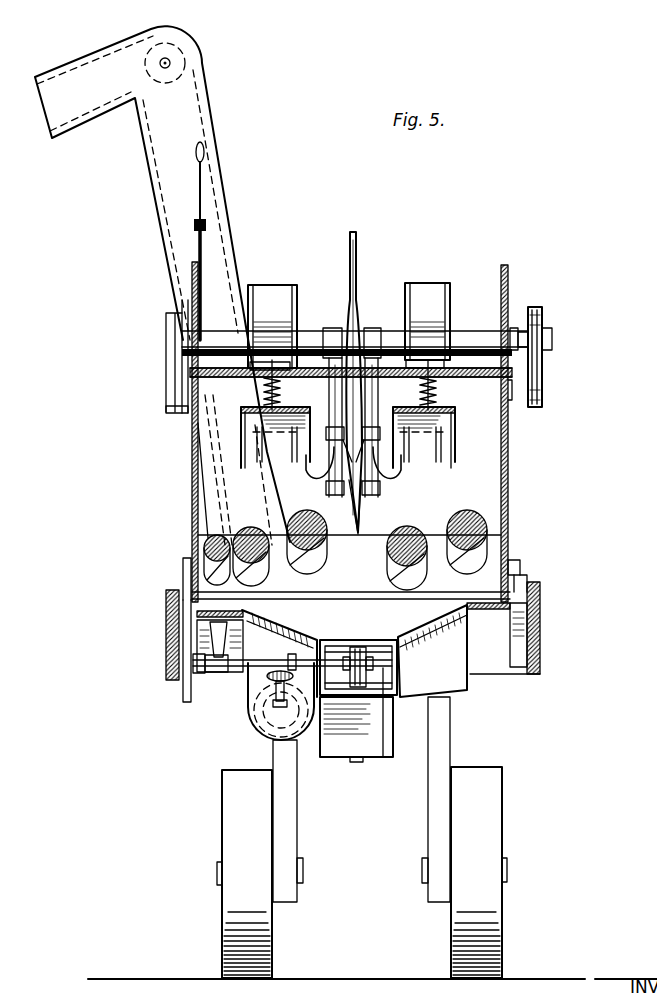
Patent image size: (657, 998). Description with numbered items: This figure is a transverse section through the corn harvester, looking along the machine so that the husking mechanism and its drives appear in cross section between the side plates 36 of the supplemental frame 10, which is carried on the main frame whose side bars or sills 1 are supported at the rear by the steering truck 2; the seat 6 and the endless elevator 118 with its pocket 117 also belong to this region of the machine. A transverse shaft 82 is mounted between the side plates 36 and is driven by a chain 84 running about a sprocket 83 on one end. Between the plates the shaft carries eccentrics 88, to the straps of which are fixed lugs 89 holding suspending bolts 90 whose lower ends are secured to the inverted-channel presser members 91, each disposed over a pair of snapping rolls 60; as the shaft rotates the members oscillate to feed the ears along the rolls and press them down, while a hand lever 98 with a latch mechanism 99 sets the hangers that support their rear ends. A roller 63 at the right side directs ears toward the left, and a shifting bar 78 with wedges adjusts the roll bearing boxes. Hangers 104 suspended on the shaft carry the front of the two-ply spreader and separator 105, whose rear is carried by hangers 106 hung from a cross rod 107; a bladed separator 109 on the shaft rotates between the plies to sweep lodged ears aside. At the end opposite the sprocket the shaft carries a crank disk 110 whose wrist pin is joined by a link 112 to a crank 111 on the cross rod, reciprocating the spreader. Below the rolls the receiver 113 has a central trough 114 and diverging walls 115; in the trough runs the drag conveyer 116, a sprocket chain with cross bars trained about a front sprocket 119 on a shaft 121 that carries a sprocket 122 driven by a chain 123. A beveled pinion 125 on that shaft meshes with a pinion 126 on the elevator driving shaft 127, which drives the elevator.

The side bars or sills 1 is at (166, 632).
The steering truck 2 is at (362, 837).
The seat 6 is at (380, 472).
The supplemental frame 10 is at (510, 633).
The side plates 36 is at (197, 508).
The snapping rolls 60 is at (262, 528).
The roller 63 is at (213, 538).
The shifting bar 78 is at (527, 558).
The transverse shaft 82 is at (470, 333).
The sprocket 83 is at (540, 308).
The chain 84 is at (542, 383).
The eccentrics 88 is at (297, 285).
The lugs 89 is at (257, 382).
The suspending bolts 90 is at (272, 353).
The presser members 91 is at (240, 410).
The hand lever 98 is at (202, 194).
The latch mechanism 99 is at (192, 230).
The hangers 104 is at (333, 330).
The spreader and separator 105 is at (365, 513).
The hangers 106 is at (335, 472).
The cross rod 107 is at (509, 385).
The separator 109 is at (356, 236).
The crank disk 110 is at (180, 329).
The crank 111 is at (170, 403).
The link 112 is at (167, 373).
The receiver 113 is at (457, 642).
The central trough 114 is at (407, 700).
The diverging walls 115 is at (400, 637).
The drag conveyer 116 is at (337, 690).
The pocket 117 is at (276, 692).
The endless elevator 118 is at (188, 122).
The front sprocket 119 is at (373, 652).
The shaft 121 is at (383, 760).
The sprocket 122 is at (190, 693).
The chain 123 is at (181, 573).
The beveled pinion 125 is at (291, 654).
The pinion 126 is at (272, 679).
The elevator driving shaft 127 is at (257, 722).